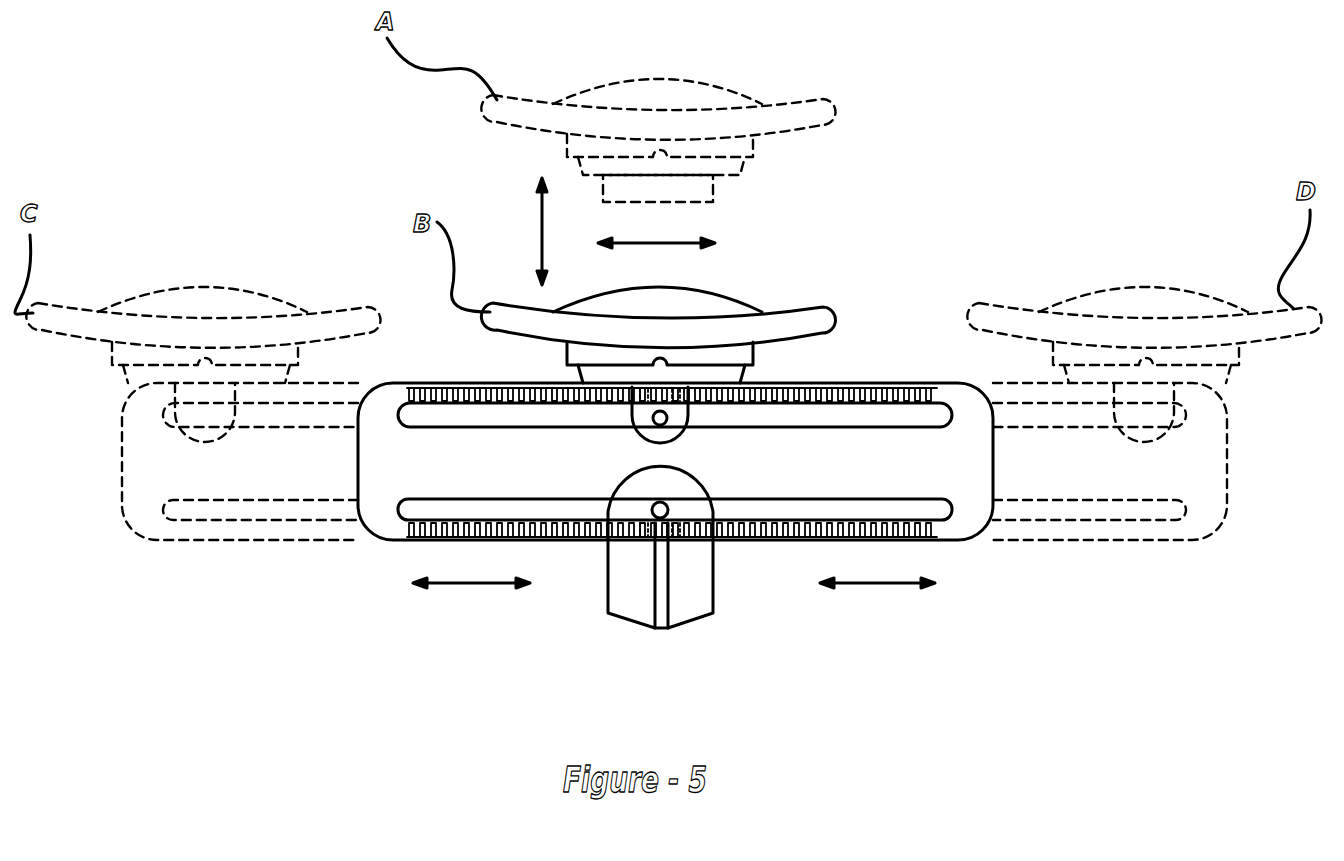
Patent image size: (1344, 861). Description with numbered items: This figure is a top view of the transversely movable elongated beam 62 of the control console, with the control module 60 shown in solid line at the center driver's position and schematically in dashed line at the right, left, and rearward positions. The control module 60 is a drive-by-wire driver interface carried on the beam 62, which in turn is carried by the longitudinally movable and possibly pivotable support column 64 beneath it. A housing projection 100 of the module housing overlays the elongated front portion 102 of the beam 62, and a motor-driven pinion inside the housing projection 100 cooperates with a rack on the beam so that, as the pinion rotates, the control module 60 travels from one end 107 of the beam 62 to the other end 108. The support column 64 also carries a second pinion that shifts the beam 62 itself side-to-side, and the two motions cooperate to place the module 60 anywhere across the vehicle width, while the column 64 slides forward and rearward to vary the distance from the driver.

The control module 60 is at (737, 292).
The elongated beam 62 is at (798, 490).
The support column 64 is at (693, 620).
The housing projection 100 is at (690, 418).
The elongated front portion 102 is at (905, 392).
The one end of the beam 107 is at (365, 490).
The other end of the beam 108 is at (980, 505).